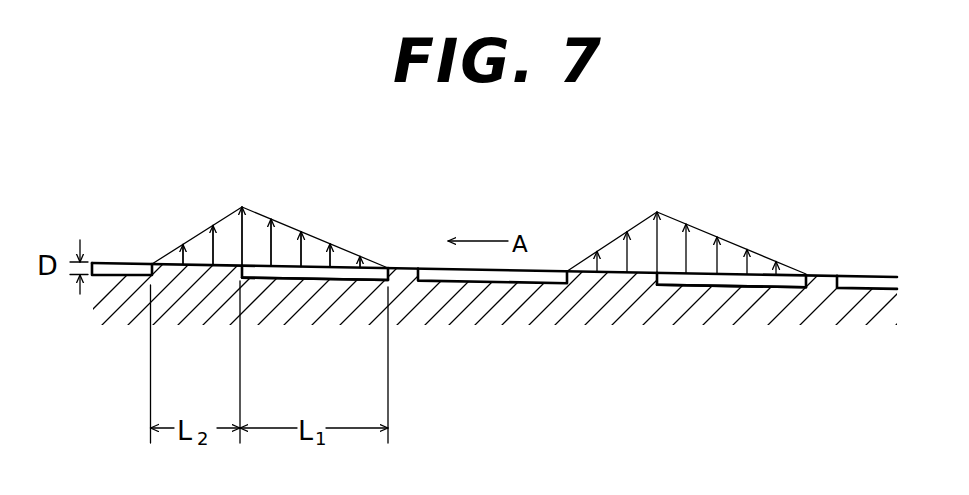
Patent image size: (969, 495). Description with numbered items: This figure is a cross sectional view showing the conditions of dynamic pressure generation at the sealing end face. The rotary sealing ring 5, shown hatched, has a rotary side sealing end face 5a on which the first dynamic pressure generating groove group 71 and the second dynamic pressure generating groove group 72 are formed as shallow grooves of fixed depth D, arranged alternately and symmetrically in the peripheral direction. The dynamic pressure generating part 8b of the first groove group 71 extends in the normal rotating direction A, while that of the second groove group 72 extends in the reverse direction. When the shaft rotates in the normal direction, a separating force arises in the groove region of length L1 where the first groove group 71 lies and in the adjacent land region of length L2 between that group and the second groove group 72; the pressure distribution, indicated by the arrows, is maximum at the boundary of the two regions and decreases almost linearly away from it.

The rotary sealing ring 5 is at (507, 303).
The rotary side sealing end face 5a is at (822, 272).
The first dynamic pressure generating groove group 71 is at (318, 281).
The second dynamic pressure generating groove group 72 is at (127, 260).
The dynamic pressure generating part 8b is at (262, 279).